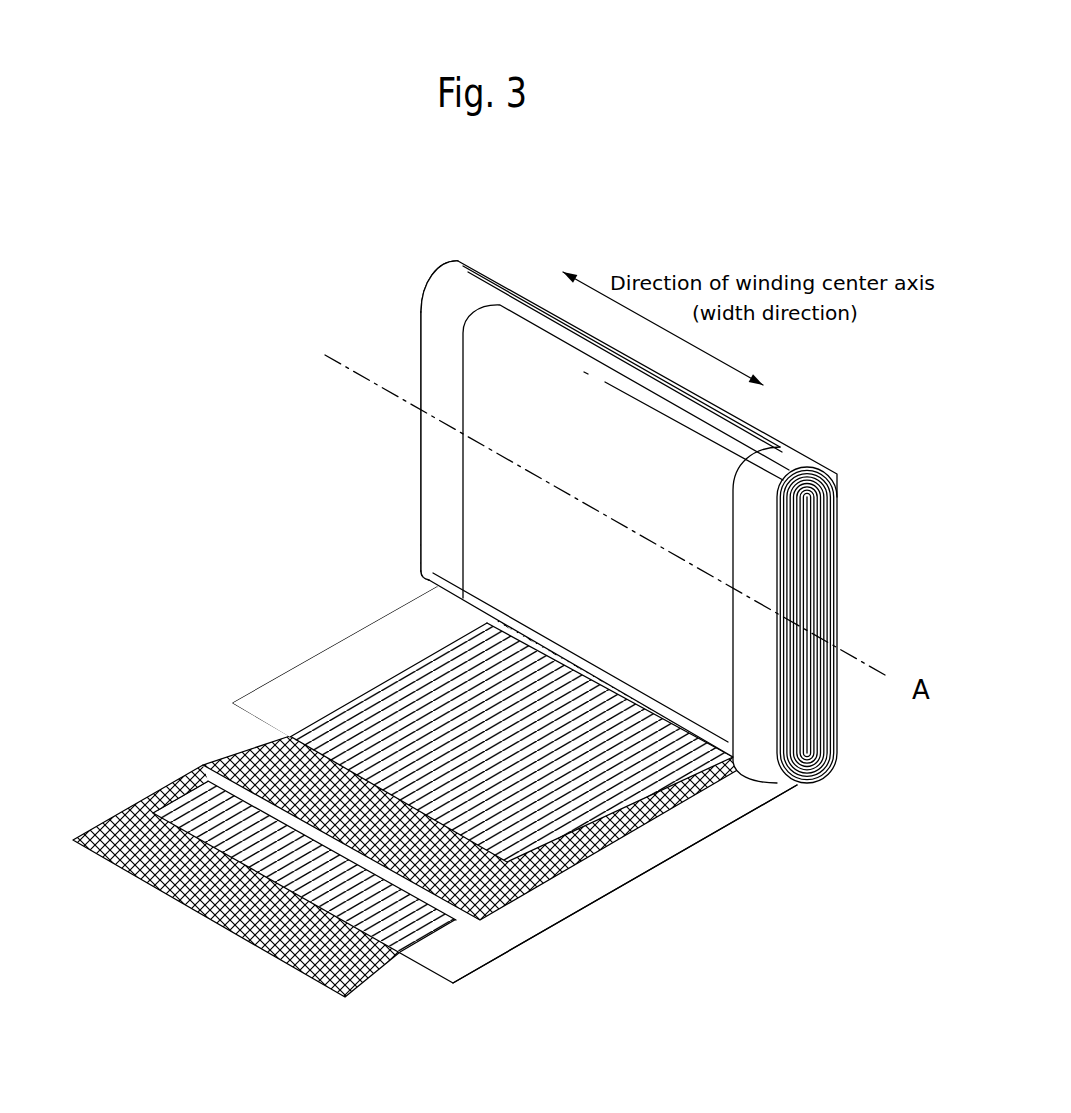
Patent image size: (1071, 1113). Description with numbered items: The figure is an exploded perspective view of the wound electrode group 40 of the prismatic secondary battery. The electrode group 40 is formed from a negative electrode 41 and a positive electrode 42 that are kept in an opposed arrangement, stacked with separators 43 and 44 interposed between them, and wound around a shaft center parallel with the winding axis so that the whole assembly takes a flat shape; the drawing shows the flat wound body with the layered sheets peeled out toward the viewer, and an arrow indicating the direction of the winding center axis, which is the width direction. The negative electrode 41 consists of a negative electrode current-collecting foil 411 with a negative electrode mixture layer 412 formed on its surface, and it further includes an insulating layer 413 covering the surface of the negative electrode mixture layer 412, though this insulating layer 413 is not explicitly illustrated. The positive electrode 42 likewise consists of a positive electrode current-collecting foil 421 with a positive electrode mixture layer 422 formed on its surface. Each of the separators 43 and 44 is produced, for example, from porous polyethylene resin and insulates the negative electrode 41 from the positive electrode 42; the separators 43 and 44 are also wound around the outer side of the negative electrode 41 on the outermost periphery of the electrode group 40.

The electrode group 40 is at (795, 203).
The negative electrode 41 is at (620, 892).
The negative electrode current-collecting foil 411 is at (762, 563).
The negative electrode mixture layer 412 is at (408, 920).
The insulating layer 413 is at (367, 916).
The positive electrode 42 is at (597, 773).
The positive electrode current-collecting foil 421 is at (440, 355).
The positive electrode mixture layer 422 is at (360, 727).
The separator 43 is at (132, 837).
The separator 44 is at (247, 742).